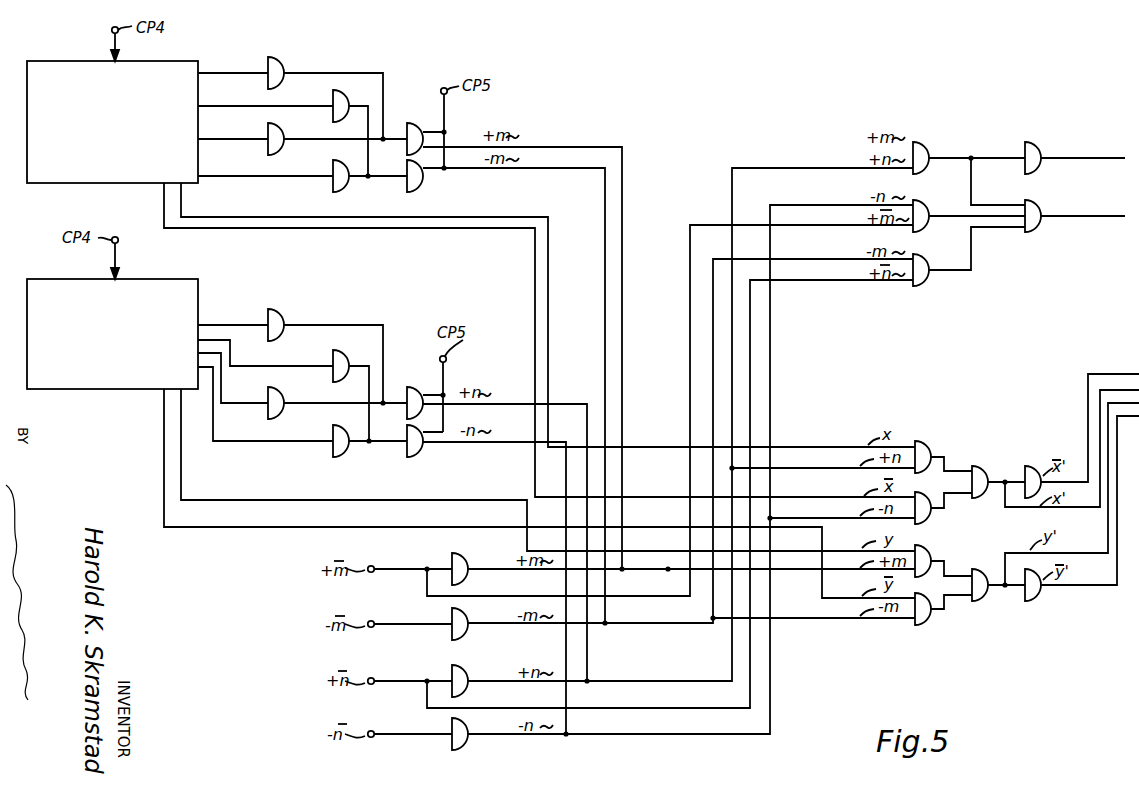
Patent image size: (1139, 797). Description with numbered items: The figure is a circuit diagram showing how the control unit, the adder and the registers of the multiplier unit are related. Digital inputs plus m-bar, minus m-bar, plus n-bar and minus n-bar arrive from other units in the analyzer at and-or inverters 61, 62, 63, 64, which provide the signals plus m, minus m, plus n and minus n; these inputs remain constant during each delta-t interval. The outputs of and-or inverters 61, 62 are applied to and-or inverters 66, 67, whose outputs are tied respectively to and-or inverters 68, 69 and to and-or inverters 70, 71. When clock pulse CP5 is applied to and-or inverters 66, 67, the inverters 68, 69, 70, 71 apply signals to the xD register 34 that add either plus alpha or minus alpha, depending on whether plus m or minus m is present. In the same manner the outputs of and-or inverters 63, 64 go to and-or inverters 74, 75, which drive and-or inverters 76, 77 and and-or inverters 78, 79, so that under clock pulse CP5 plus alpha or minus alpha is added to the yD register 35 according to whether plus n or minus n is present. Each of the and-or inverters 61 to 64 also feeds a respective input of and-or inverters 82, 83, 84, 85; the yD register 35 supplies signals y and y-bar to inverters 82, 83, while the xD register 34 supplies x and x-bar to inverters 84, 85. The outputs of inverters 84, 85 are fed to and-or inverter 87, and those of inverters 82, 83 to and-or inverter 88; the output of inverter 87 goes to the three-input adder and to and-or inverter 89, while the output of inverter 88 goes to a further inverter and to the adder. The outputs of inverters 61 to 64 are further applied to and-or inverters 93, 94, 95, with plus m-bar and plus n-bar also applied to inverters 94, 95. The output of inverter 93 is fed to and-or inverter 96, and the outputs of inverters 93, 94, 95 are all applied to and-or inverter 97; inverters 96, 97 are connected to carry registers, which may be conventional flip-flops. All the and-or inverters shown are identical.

The xD register 34 is at (80, 183).
The yD register 35 is at (93, 389).
The and-or inverter 61 is at (463, 552).
The and-or inverter 62 is at (462, 636).
The and-or inverter 63 is at (462, 693).
The and-or inverter 64 is at (462, 746).
The and-or inverter 66 is at (418, 131).
The and-or inverter 67 is at (422, 188).
The and-or inverter 68 is at (289, 135).
The and-or inverter 69 is at (283, 64).
The and-or inverter 70 is at (330, 173).
The and-or inverter 71 is at (332, 102).
The and-or inverter 74 is at (405, 398).
The and-or inverter 75 is at (419, 451).
The and-or inverter 76 is at (277, 312).
The and-or inverter 77 is at (288, 399).
The and-or inverter 78 is at (339, 357).
The and-or inverter 79 is at (334, 438).
The and-or inverter 82 is at (928, 551).
The and-or inverter 83 is at (926, 621).
The and-or inverter 84 is at (928, 447).
The and-or inverter 85 is at (928, 517).
The and-or inverter 87 is at (1002, 458).
The and-or inverter 88 is at (985, 600).
The and-or inverter 89 is at (1038, 468).
The and-or inverter 93 is at (951, 136).
The and-or inverter 94 is at (928, 202).
The and-or inverter 95 is at (969, 256).
The and-or inverter 96 is at (1062, 136).
The and-or inverter 97 is at (1075, 205).